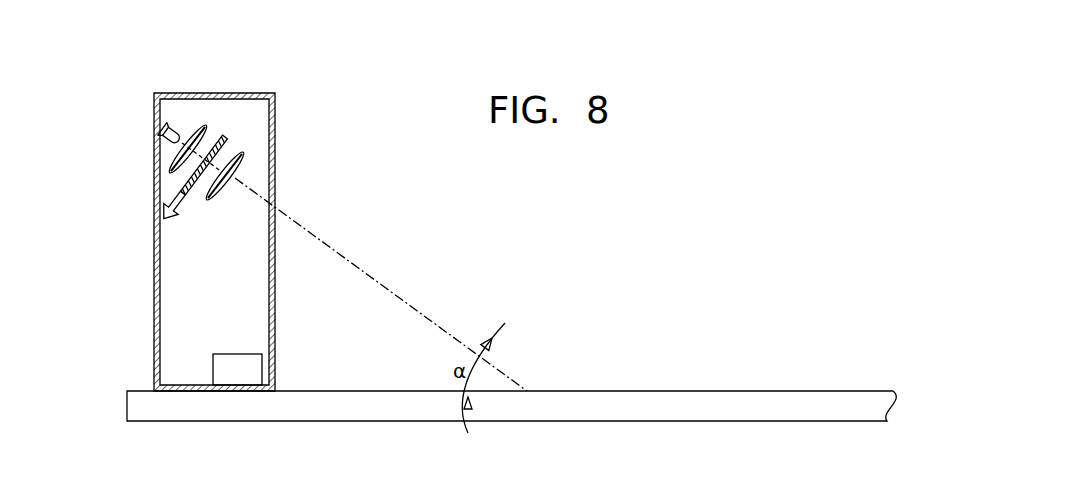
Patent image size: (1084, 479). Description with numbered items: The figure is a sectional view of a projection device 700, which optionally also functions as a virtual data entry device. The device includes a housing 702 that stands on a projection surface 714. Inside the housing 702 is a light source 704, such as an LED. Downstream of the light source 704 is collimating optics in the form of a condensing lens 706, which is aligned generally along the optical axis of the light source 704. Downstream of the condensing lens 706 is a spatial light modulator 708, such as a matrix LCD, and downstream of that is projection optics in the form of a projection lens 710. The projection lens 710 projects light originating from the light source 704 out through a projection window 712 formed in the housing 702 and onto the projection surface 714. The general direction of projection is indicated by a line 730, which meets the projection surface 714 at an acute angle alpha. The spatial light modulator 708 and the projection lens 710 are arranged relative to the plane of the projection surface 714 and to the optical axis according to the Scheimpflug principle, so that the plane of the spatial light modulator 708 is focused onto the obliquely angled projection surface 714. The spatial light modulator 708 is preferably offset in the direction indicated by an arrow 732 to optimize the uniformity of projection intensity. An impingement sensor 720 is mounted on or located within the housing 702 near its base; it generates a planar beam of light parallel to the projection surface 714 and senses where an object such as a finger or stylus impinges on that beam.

The projection device 700 is at (130, 86).
The housing 702 is at (155, 240).
The light source 704 is at (174, 130).
The condensing lens 706 is at (208, 126).
The spatial light modulator 708 is at (228, 140).
The projection lens 710 is at (245, 160).
The projection window 712 is at (276, 203).
The projection surface 714 is at (750, 391).
The impingement sensor 720 is at (224, 362).
The line 730 is at (388, 290).
The arrow 732 is at (185, 205).